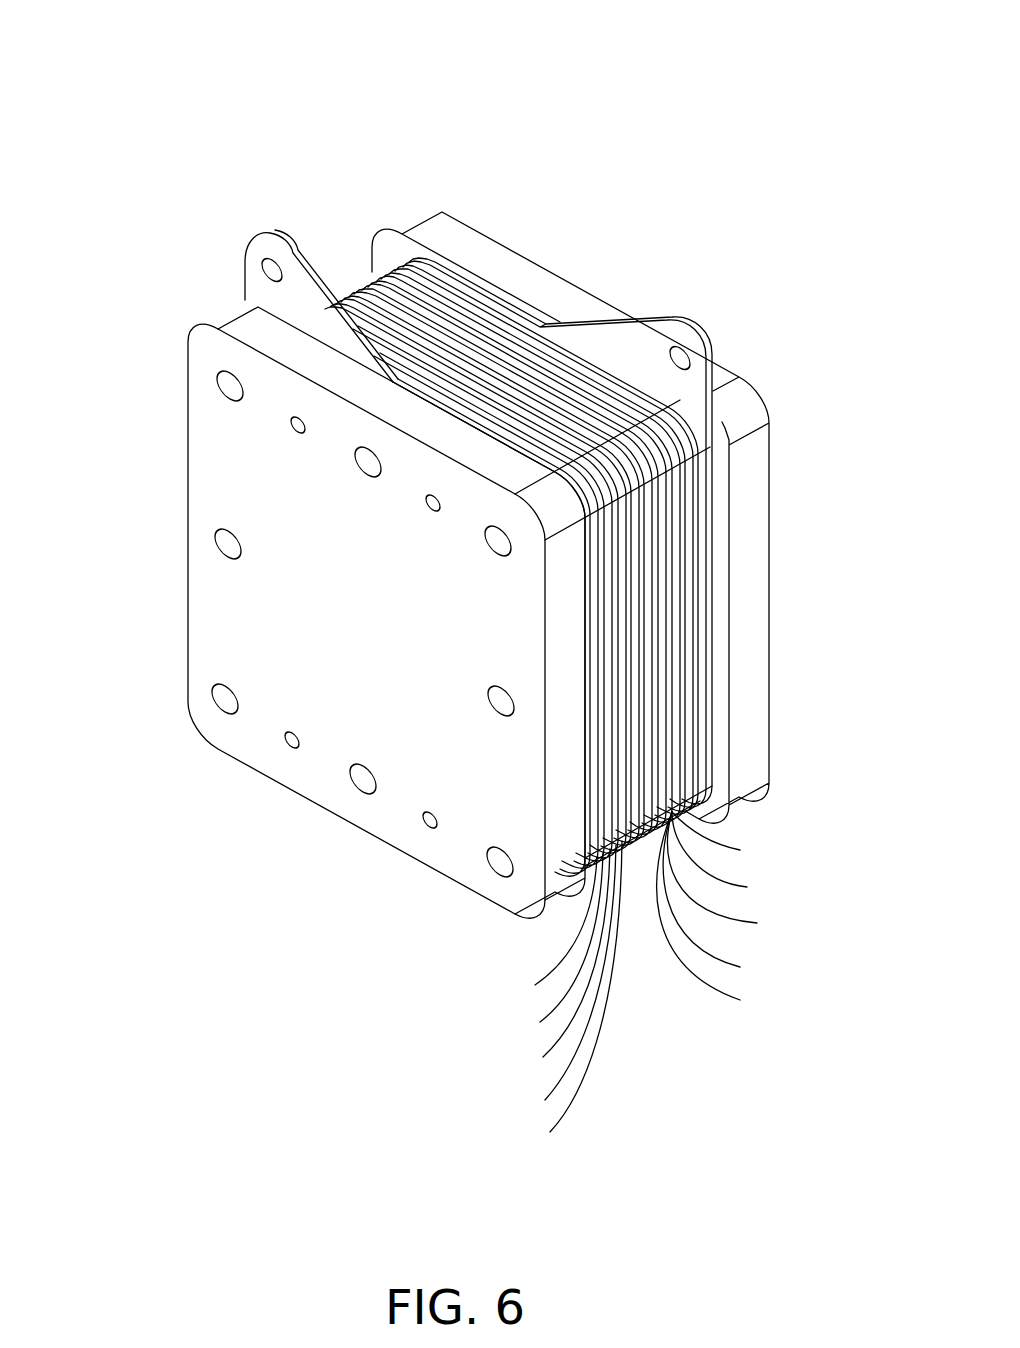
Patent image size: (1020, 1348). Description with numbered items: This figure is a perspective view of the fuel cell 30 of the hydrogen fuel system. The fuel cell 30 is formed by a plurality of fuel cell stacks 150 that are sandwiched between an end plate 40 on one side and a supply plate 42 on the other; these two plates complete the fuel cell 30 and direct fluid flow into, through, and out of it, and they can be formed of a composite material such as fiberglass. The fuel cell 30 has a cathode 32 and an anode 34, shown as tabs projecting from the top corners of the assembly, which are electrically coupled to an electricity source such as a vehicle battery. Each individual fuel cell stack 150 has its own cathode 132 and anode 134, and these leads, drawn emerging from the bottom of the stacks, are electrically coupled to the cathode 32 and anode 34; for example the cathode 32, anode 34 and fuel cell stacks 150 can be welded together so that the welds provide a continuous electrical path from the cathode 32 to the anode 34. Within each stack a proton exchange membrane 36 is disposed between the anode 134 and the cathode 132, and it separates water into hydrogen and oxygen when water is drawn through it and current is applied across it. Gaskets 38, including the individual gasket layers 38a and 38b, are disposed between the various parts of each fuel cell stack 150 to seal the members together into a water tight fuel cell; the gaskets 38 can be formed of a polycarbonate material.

The fuel cell 30 is at (255, 78).
The cathode 32 is at (263, 248).
The anode 34 is at (680, 337).
The proton exchange membrane 36 is at (642, 942).
The gaskets 38 is at (333, 237).
The anode flow field plate 38a is at (640, 925).
The cathode flow field plate 38b is at (636, 965).
The end plate 40 is at (490, 248).
The supply plate 42 is at (212, 457).
The cathode 132 is at (636, 907).
The anode 134 is at (636, 982).
The fuel cell stacks 150 is at (660, 1012).